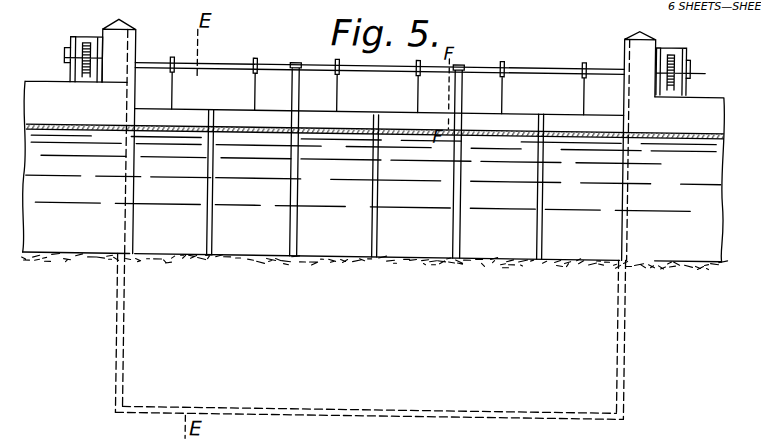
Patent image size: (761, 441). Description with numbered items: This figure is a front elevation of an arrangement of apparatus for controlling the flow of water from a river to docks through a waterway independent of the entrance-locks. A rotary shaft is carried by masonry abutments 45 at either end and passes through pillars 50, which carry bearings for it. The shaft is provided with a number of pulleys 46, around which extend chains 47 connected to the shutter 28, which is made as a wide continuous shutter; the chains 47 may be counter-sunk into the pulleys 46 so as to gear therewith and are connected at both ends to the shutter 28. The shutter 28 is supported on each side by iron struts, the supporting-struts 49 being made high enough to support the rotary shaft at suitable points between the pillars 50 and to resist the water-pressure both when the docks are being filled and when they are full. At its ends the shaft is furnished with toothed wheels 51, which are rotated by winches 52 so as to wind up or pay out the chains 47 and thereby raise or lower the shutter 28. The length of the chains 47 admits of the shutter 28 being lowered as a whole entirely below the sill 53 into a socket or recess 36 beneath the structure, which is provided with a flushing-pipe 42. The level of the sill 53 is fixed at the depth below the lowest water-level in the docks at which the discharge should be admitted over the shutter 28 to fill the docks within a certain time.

The pillar 50 is at (112, 27).
The toothed wheel 51 is at (80, 65).
The winch 52 is at (63, 55).
The pulley 46 is at (178, 55).
The chain 47 is at (164, 94).
The supporting-strut 49 is at (292, 90).
The masonry abutment 45 is at (100, 176).
The shutter 28 is at (373, 184).
The underground chamber 36 is at (248, 334).
The flushing-pipe 42 is at (400, 397).
The sill 53 is at (636, 268).